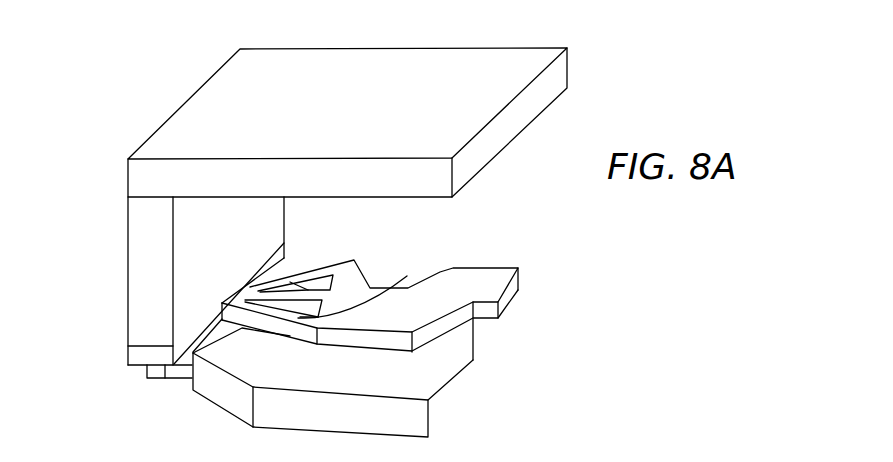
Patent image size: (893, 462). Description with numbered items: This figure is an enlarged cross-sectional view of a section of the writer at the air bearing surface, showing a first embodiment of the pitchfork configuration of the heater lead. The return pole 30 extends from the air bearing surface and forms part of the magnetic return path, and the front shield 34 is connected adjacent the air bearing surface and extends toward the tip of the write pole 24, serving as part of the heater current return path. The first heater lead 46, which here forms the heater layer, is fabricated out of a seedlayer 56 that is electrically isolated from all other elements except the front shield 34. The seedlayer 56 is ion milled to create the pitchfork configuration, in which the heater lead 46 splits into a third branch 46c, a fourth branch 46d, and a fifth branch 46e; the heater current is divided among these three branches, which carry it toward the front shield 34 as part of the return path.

The return pole 30 is at (460, 57).
The front shield 34 is at (142, 300).
The seedlayer 56 is at (135, 353).
The write pole 24 is at (165, 371).
The first heater lead 46 is at (510, 297).
The third branch 46c is at (296, 280).
The fourth branch 46d is at (310, 292).
The fifth branch 46e is at (387, 291).